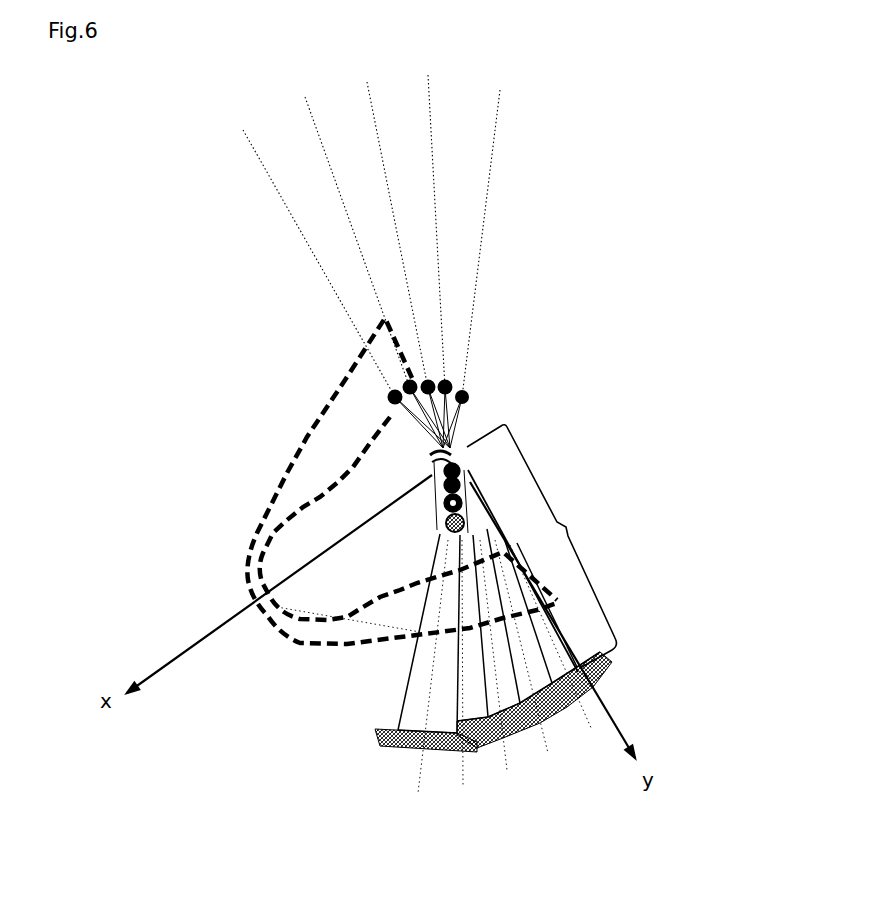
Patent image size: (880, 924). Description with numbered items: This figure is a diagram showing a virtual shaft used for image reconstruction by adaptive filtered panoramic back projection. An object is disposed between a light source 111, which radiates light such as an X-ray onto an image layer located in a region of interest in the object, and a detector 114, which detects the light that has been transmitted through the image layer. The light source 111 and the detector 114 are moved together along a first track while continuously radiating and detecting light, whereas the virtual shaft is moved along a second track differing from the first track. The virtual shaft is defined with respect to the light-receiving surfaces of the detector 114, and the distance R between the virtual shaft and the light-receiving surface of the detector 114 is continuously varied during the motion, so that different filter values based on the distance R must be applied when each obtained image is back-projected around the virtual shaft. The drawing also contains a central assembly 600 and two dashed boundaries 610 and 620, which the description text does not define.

The light source 111 is at (473, 389).
The rotating hub assembly 600 is at (473, 480).
The distance between the virtual shaft and the detector R is at (560, 524).
The detector 114 is at (610, 673).
The outer scanning region boundary 610 is at (290, 447).
The inner scanning region boundary 620 is at (243, 573).